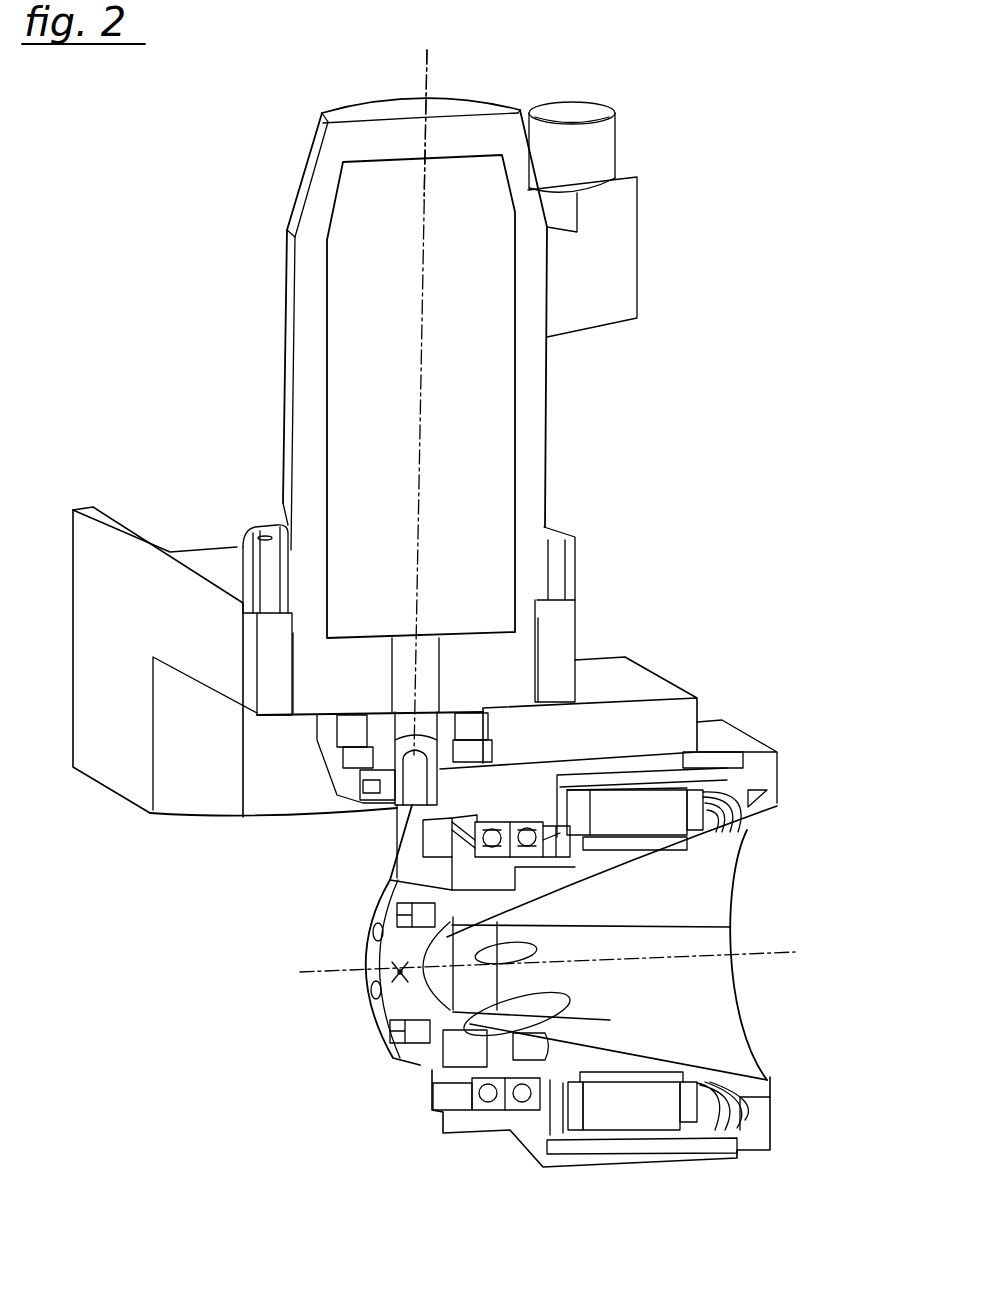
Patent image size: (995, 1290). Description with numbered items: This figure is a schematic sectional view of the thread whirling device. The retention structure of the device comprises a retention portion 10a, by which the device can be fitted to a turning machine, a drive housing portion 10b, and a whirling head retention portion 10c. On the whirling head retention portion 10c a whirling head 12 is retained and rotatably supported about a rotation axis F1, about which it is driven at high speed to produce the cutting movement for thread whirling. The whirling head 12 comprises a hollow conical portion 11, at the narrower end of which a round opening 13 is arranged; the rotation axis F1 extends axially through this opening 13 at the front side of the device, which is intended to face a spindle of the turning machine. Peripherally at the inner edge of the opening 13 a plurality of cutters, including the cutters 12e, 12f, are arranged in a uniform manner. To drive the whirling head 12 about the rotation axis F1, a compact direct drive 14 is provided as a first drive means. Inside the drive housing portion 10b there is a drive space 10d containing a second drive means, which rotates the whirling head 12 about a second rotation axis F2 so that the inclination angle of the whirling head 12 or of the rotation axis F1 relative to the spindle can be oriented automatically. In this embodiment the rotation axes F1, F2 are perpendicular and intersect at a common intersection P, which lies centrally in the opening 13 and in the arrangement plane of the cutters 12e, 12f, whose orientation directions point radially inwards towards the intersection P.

The retention portion 10a is at (87, 842).
The drive housing portion 10b is at (613, 438).
The whirling head retention portion 10c is at (807, 1157).
The drive space 10d is at (612, 500).
The hollow conical portion 11 is at (800, 852).
The whirling head 12 is at (370, 1145).
The cutter 12e is at (303, 921).
The cutter 12f is at (372, 1003).
The round opening 13 is at (823, 907).
The compact direct drive 14 is at (800, 687).
The rotation axis F1 is at (800, 1002).
The second rotation axis F2 is at (628, 363).
The intersection P is at (400, 972).